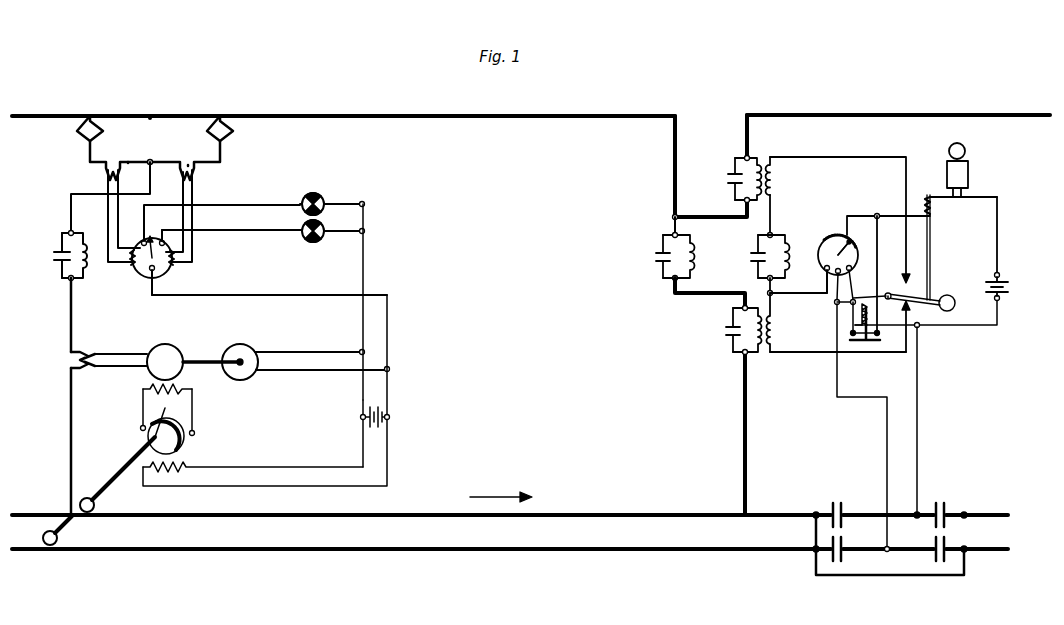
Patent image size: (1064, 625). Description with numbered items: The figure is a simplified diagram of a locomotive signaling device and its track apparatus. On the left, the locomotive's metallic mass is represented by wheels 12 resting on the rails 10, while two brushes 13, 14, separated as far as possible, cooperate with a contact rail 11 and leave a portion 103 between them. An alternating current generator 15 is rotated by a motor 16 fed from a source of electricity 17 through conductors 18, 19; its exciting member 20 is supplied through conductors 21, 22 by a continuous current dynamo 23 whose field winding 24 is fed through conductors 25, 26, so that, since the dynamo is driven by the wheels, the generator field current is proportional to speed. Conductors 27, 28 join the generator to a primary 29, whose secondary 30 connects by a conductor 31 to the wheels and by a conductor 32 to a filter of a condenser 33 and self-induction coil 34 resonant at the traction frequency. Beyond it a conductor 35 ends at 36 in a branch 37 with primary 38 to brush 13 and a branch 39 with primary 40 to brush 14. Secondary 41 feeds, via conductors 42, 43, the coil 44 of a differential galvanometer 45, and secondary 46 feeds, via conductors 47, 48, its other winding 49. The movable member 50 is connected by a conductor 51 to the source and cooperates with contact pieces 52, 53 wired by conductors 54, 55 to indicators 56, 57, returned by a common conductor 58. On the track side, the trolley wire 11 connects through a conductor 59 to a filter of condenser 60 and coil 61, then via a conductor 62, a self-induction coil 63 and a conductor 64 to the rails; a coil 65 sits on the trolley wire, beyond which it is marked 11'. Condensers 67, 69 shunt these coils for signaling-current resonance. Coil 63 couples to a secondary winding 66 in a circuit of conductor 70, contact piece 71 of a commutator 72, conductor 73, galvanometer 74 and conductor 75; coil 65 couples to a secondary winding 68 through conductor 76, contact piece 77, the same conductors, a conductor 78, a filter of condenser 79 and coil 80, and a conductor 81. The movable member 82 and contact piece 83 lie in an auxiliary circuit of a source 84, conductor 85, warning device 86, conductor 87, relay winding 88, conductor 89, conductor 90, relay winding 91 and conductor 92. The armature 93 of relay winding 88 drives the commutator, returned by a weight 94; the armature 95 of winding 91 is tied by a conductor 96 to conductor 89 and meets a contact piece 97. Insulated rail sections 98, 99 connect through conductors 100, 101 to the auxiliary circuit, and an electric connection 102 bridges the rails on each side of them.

The rails 10 is at (440, 518).
The contact rail 11 is at (343, 138).
The trolley wire 11' is at (898, 95).
The wheels 12 is at (58, 537).
The brush 13 is at (230, 136).
The brush 14 is at (80, 136).
The alternating current generator 15 is at (172, 356).
The motor 16 is at (243, 352).
The source of electricity 17 is at (382, 420).
The conductor 18 is at (303, 372).
The conductor 19 is at (315, 351).
The exciting member 20 is at (185, 389).
The conductor 21 is at (141, 411).
The conductor 22 is at (194, 420).
The continuous current dynamo 23 is at (160, 432).
The field winding 24 is at (186, 466).
The conductor 25 is at (278, 466).
The conductor 26 is at (298, 488).
The conductor 27 is at (128, 368).
The conductor 28 is at (132, 354).
The primary 29 is at (97, 353).
The secondary 30 is at (75, 363).
The conductor 31 is at (70, 455).
The conductor 32 is at (71, 318).
The condenser 33 is at (54, 256).
The self-induction coil 34 is at (86, 270).
The conductor 35 is at (71, 210).
The branching point 36 is at (150, 159).
The branch circuit 37 is at (222, 164).
The primary 38 is at (188, 165).
The branch circuit 39 is at (133, 161).
The primary 40 is at (100, 163).
The secondary 41 is at (193, 172).
The conductor 42 is at (190, 240).
The conductor 43 is at (183, 205).
The coil 44 is at (172, 266).
The differential galvanometer 45 is at (147, 270).
The secondary 46 is at (107, 174).
The conductor 47 is at (108, 228).
The conductor 48 is at (119, 212).
The winding 49 is at (135, 266).
The movable member 50 is at (154, 271).
The conductor 51 is at (264, 294).
The contact piece 52 is at (144, 241).
The contact piece 53 is at (162, 241).
The conductor 54 is at (272, 203).
The conductor 55 is at (285, 233).
The indicator 56 is at (319, 197).
The indicator 57 is at (318, 240).
The common conductor 58 is at (365, 262).
The conductor 59 is at (672, 226).
The condenser 60 is at (658, 263).
The self-induction coil 61 is at (693, 262).
The conductor 62 is at (702, 296).
The self-induction coil 63 is at (750, 336).
The conductor 64 is at (744, 455).
The self-induction coil 65 is at (753, 176).
The secondary winding 66 is at (772, 350).
The condenser 67 is at (728, 333).
The secondary winding 68 is at (776, 182).
The condenser 69 is at (734, 180).
The conductor 70 is at (812, 354).
The contact piece 71 is at (910, 309).
The commutator 72 is at (888, 293).
The conductor 73 is at (867, 287).
The galvanometer 74 is at (826, 262).
The conductor 75 is at (800, 294).
The conductor 76 is at (860, 158).
The contact piece 77 is at (908, 281).
The conductor 78 is at (767, 291).
The condenser 79 is at (757, 258).
The self-induction coil 80 is at (788, 258).
The conductor 81 is at (773, 212).
The movable member 82 is at (852, 250).
The contact piece 83 is at (848, 241).
The source of electricity 84 is at (1006, 287).
The conductor 85 is at (999, 255).
The warning device 86 is at (962, 176).
The conductor 87 is at (938, 195).
The relay winding 88 is at (934, 212).
The conductor 89 is at (888, 215).
The conductor 90 is at (836, 304).
The relay winding 91 is at (868, 316).
The conductor 92 is at (985, 327).
The movable armature 93 is at (931, 256).
The weight 94 is at (956, 304).
The movable armature 95 is at (870, 342).
The conductor 96 is at (878, 262).
The contact piece 97 is at (851, 334).
The insulated section 98 is at (914, 552).
The insulated section 99 is at (838, 513).
The conductor 100 is at (886, 412).
The conductor 101 is at (918, 424).
The electric connection 102 is at (880, 577).
The portion 103 is at (160, 116).